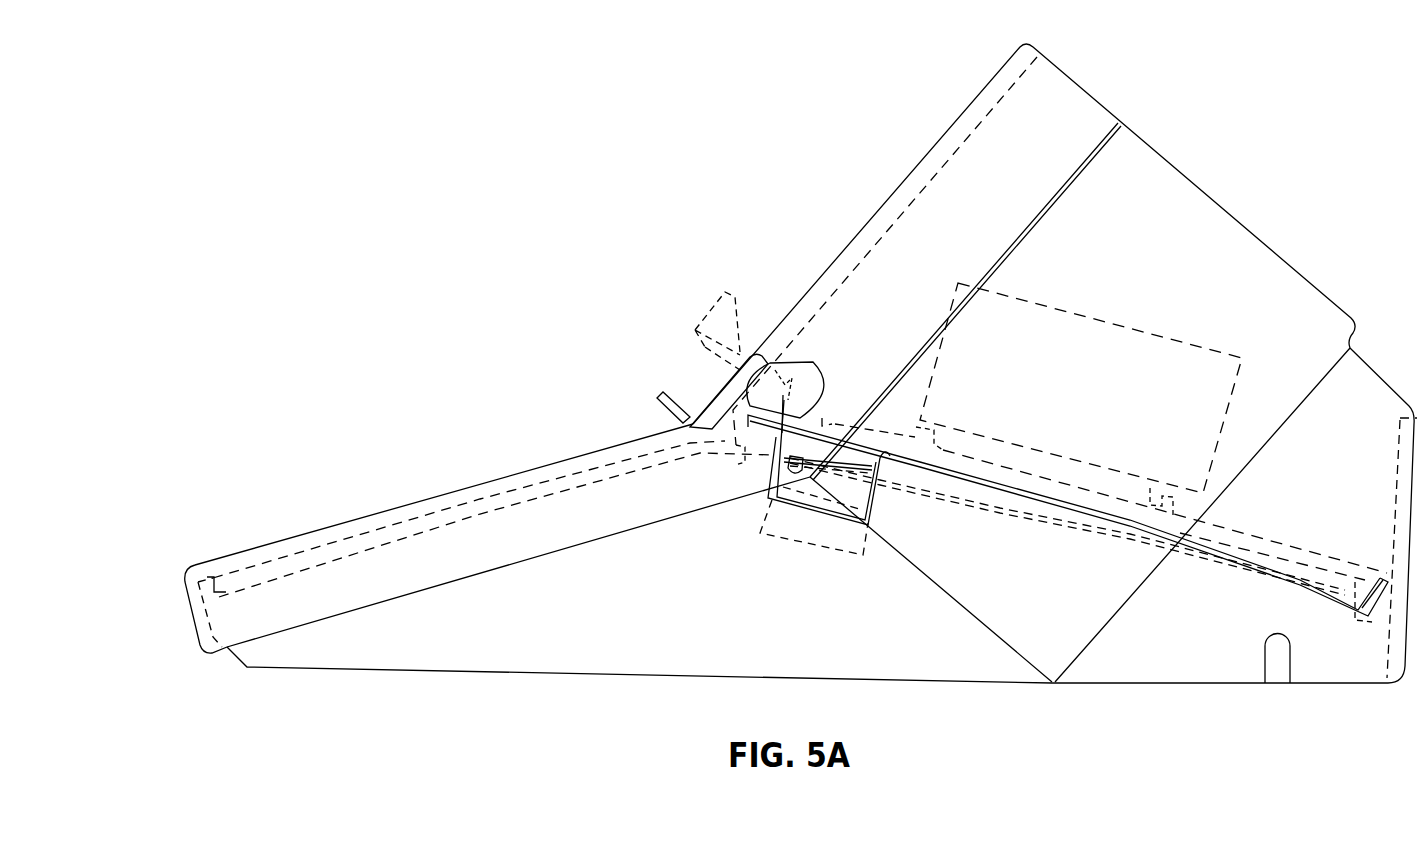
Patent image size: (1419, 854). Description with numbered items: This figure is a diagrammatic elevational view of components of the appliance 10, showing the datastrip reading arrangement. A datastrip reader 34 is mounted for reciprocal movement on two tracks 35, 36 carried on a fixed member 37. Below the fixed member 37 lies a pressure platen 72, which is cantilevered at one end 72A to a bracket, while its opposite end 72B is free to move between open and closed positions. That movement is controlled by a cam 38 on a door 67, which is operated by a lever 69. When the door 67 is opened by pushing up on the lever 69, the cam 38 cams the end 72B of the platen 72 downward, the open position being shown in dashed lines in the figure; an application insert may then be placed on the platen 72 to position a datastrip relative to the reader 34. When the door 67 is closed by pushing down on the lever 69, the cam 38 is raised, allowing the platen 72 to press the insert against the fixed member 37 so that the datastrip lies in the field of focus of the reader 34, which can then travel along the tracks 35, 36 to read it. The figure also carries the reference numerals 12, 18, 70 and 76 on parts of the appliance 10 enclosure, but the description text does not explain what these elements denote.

The appliance 10 is at (1198, 176).
The lid 12 is at (1088, 94).
The base panel 18 is at (405, 538).
The datastrip reader 34 is at (1083, 315).
The track 35 is at (943, 445).
The track 36 is at (1150, 505).
The fixed member 37 is at (1260, 543).
The cam 38 is at (808, 387).
The door 67 is at (713, 394).
The lever 69 is at (660, 407).
The catch 70 is at (213, 583).
The pressure platen 72 is at (1021, 513).
The end of platen 72A is at (1374, 620).
The end of platen 72B is at (734, 463).
The hook 76 is at (1370, 578).